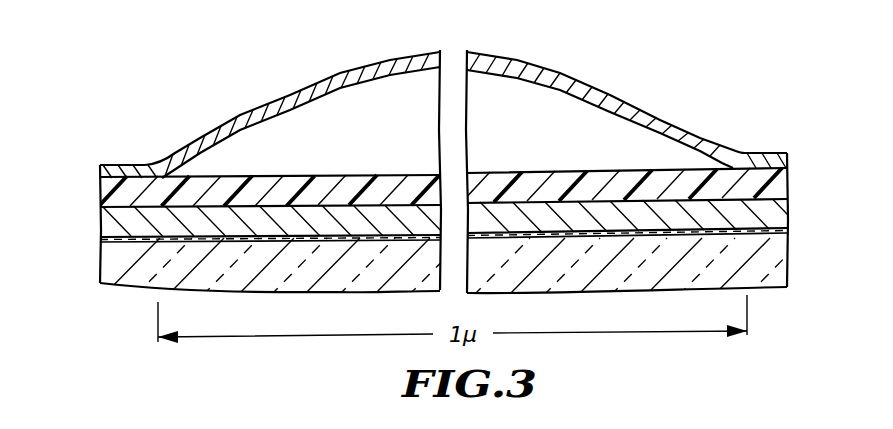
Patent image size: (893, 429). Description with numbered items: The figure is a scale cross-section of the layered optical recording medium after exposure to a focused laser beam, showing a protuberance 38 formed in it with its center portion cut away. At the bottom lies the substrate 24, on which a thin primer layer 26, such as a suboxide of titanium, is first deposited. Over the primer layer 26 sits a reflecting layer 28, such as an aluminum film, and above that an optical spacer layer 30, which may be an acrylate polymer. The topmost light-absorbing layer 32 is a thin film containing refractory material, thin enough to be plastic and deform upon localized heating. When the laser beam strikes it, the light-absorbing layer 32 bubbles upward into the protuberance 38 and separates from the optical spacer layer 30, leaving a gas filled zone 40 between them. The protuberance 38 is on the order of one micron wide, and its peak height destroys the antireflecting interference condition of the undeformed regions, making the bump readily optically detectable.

The substrate 24 is at (113, 280).
The primer layer 26 is at (100, 240).
The reflecting layer 28 is at (787, 217).
The optical spacer layer 30 is at (788, 181).
The light-absorbing layer 32 is at (781, 153).
The protuberance 38 is at (439, 48).
The gas filled zone 40 is at (383, 103).